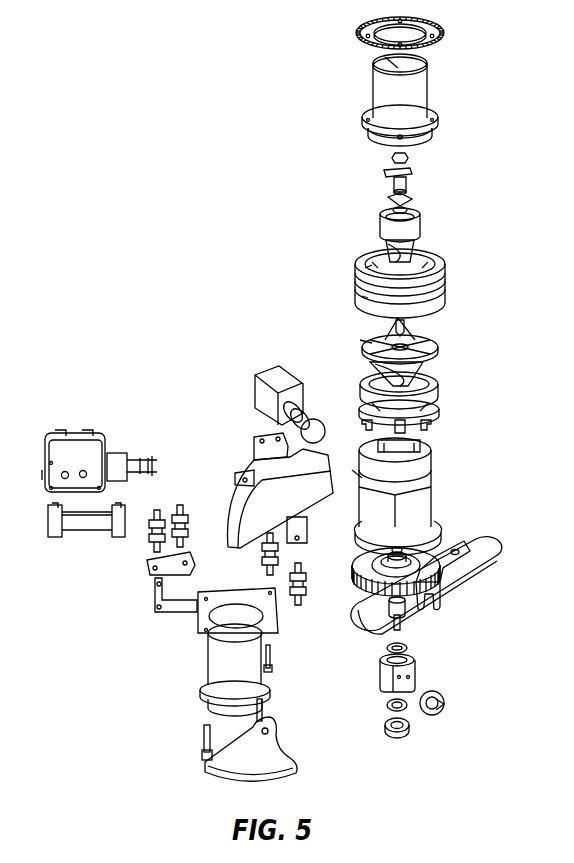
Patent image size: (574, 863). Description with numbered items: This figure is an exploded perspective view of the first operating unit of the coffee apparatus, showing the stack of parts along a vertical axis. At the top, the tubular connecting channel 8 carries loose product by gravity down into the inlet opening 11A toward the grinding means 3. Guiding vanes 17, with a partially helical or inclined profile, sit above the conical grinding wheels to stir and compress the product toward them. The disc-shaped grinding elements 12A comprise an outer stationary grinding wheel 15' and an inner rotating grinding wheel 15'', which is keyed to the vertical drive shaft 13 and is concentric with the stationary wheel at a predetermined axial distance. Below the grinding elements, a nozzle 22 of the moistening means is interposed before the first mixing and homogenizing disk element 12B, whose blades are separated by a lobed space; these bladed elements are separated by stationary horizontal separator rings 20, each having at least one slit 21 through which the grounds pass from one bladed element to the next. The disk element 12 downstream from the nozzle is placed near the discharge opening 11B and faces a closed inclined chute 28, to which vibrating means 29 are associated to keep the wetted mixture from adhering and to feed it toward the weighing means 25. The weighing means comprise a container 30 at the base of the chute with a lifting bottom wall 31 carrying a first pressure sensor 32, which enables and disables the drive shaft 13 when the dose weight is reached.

The inlet opening 11A is at (385, 57).
The tubular connecting channel 8 is at (410, 92).
The guiding vanes 17 is at (412, 196).
The inner rotating grinding wheel 15'' is at (371, 227).
The disc-shaped grinding elements 12A is at (440, 255).
The grinding means 3 is at (355, 270).
The outer stationary grinding wheel 15' is at (432, 276).
The nozzle 22 is at (425, 322).
The separator rings 20 is at (362, 340).
The slit 21 is at (440, 352).
The mixing and homogenizing disk elements 12B is at (456, 390).
The vertical drive shaft 13 is at (437, 404).
The discharge opening 11B is at (352, 470).
The disk element 12 is at (431, 460).
The first pressure sensor 32 is at (85, 450).
The weighing means 25 is at (90, 537).
The vibrating means 29 is at (256, 392).
The closed chute 28 is at (248, 497).
The container 30 is at (230, 662).
The lifting bottom wall 31 is at (250, 748).